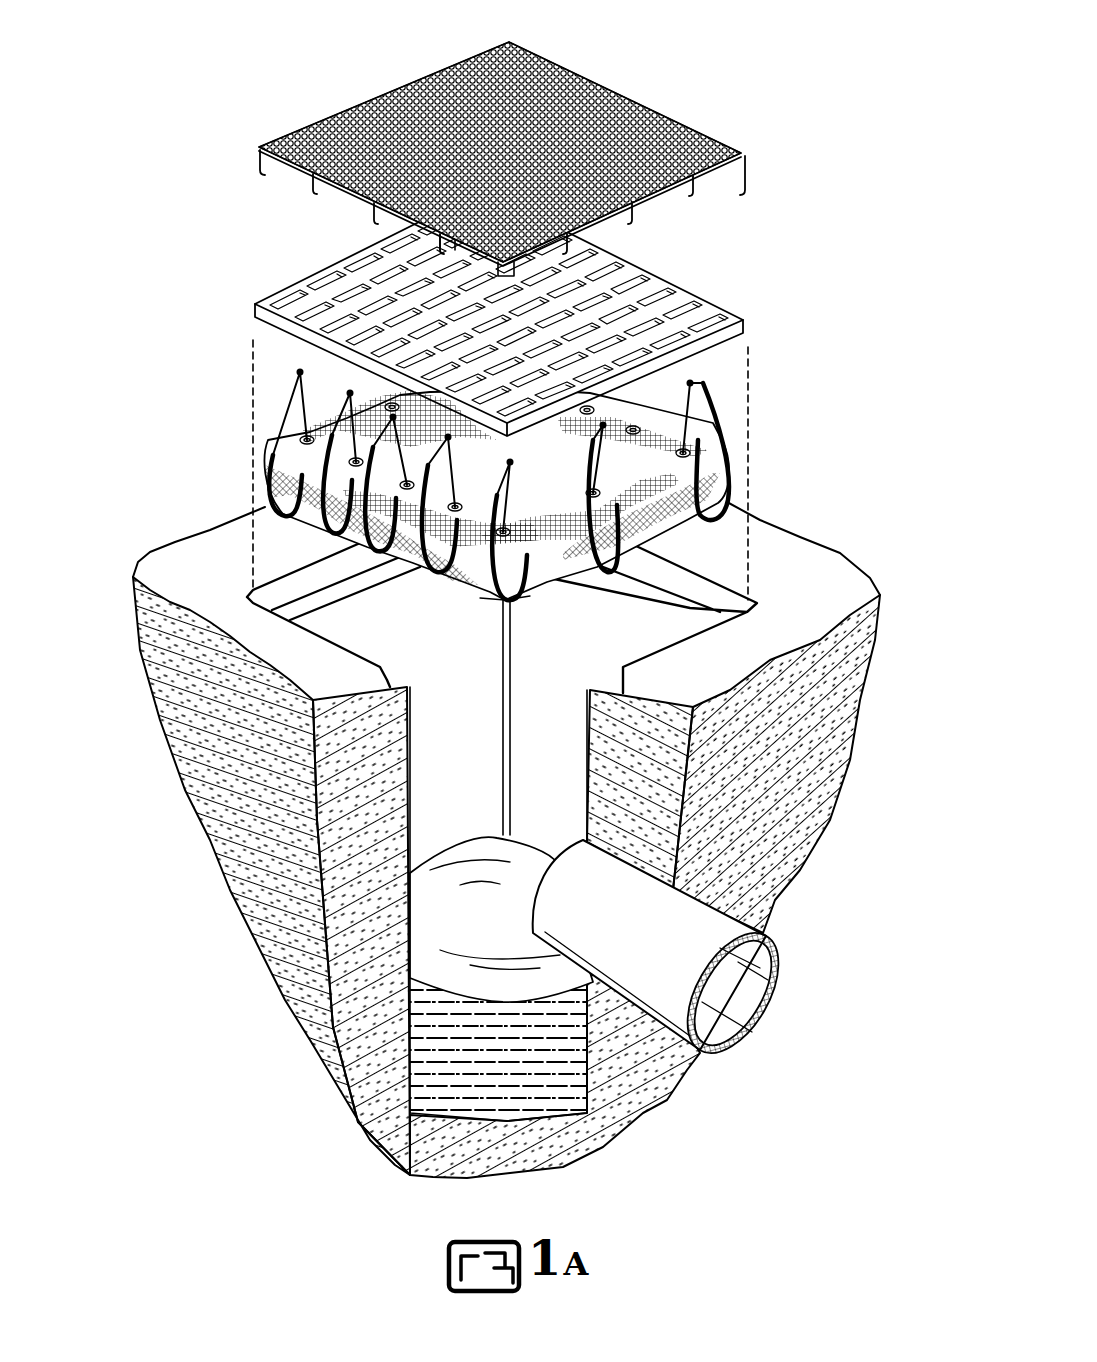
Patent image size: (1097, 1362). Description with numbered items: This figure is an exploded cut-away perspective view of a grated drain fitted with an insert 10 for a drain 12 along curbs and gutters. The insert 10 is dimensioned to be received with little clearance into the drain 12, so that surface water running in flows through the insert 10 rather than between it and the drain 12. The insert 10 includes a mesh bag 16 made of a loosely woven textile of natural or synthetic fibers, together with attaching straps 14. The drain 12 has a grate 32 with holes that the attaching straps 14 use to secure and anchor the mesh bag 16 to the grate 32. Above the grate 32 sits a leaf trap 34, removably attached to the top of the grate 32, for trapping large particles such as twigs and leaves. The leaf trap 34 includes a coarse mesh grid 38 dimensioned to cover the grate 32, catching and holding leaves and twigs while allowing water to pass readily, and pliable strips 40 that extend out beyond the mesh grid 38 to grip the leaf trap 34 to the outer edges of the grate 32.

The insert 10 is at (507, 495).
The drain 12 is at (693, 595).
The attaching straps 14 is at (267, 430).
The mesh bag 16 is at (493, 597).
The grate 32 is at (727, 309).
The leaf trap 34 is at (506, 138).
The coarse mesh grid 38 is at (682, 150).
The pliable strips 40 is at (700, 191).